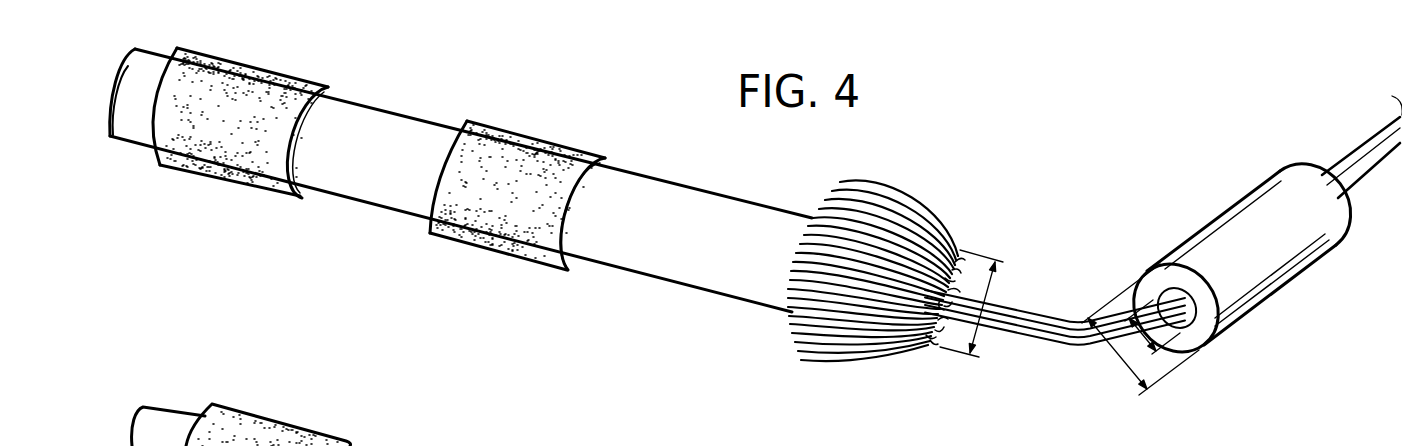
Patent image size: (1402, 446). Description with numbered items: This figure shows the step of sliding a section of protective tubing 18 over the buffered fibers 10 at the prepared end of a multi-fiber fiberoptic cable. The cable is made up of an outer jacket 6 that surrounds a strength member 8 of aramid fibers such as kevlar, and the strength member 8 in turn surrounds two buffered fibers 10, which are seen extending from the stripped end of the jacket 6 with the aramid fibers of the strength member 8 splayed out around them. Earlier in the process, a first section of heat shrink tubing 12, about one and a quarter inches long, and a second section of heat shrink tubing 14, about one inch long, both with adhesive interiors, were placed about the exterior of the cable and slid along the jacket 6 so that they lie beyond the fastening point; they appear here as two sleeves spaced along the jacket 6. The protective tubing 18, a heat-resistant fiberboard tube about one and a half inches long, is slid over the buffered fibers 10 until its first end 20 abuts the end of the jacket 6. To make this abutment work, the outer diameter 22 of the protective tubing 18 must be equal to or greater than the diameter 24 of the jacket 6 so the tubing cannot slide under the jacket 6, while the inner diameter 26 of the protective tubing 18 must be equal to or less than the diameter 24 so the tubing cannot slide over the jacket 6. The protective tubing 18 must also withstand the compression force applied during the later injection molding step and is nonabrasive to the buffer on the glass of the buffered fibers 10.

The outer jacket 6 is at (676, 195).
The strength member 8 is at (902, 206).
The buffered fibers 10 is at (1358, 140).
The first section of heat shrink tubing 12 is at (293, 73).
The second section of heat shrink tubing 14 is at (512, 142).
The protective tubing 18 is at (1300, 268).
The first end of the protective tubing 20 is at (1145, 278).
The outer diameter of the protective tubing 22 is at (1115, 350).
The diameter of the jacket 24 is at (984, 334).
The inner diameter of the protective tubing 26 is at (1160, 360).